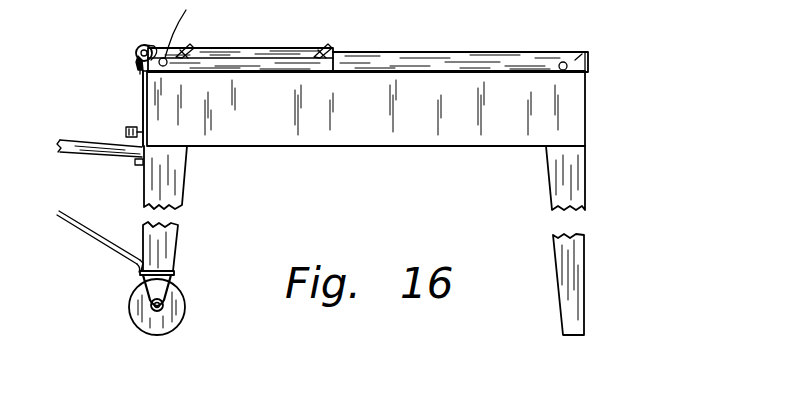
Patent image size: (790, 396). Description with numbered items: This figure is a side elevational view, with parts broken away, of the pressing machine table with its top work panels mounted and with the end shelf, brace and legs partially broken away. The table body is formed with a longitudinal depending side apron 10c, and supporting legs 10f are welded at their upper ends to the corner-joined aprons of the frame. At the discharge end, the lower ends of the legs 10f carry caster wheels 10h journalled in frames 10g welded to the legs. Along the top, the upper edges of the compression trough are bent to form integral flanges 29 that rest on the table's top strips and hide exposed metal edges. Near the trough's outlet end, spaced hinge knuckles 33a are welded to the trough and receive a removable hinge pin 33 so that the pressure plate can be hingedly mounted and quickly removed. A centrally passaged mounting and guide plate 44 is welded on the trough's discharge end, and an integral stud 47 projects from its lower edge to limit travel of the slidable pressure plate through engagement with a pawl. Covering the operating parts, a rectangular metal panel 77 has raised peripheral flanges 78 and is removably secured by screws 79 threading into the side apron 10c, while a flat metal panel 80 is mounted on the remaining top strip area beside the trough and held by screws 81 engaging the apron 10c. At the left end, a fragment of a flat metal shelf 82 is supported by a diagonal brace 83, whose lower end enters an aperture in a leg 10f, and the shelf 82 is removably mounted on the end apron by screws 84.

The depending side apron 10c is at (568, 131).
The supporting leg 10f is at (157, 187).
The caster wheel frame 10g is at (173, 273).
The caster wheel 10h is at (178, 311).
The trough flange 29 is at (290, 58).
The hinge pin 33 is at (137, 58).
The hinge knuckle 33a is at (136, 48).
The mounting and guide plate 44 is at (143, 99).
The stud 47 is at (125, 131).
The rectangular metal panel 77 is at (488, 60).
The peripheral flange 78 is at (592, 53).
The screw 79 is at (568, 68).
The flat metal panel 80 is at (222, 60).
The screw 81 is at (245, 33).
The metal shelf 82 is at (82, 150).
The diagonal brace 83 is at (107, 249).
The screw 84 is at (135, 163).